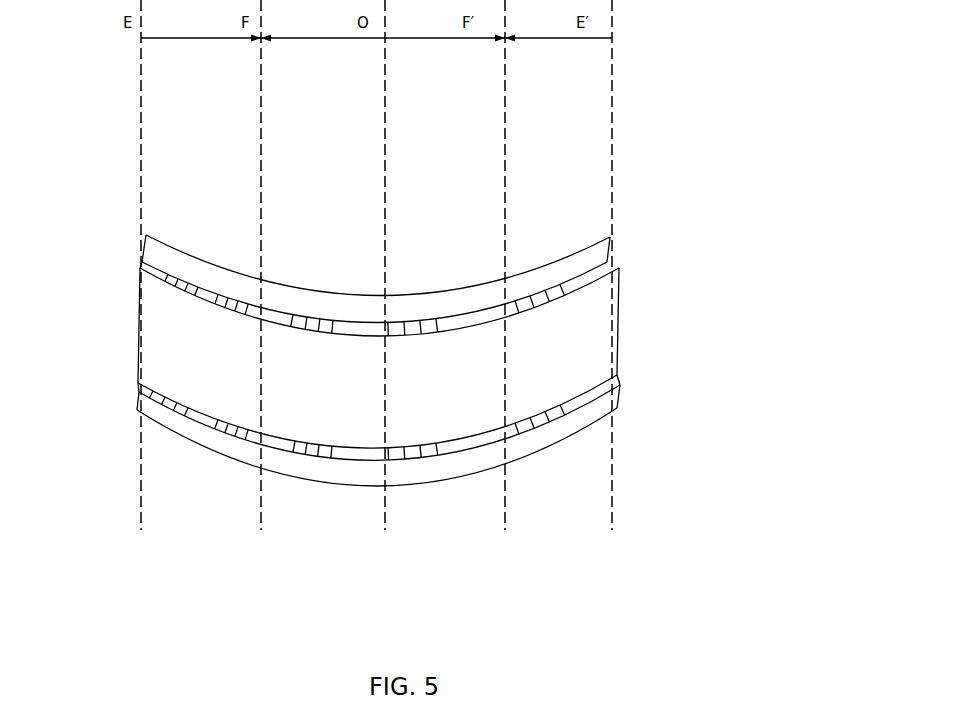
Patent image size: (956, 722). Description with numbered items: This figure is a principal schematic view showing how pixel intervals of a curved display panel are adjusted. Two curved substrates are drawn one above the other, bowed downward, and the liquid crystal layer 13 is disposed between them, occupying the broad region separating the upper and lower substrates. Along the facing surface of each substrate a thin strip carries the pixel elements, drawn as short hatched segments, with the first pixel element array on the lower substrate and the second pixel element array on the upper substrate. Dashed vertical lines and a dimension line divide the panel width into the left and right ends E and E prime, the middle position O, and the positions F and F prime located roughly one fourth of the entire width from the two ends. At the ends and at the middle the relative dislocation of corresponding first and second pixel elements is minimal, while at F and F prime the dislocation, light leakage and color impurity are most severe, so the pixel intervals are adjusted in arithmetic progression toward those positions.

The liquid crystal layer 13 is at (590, 347).